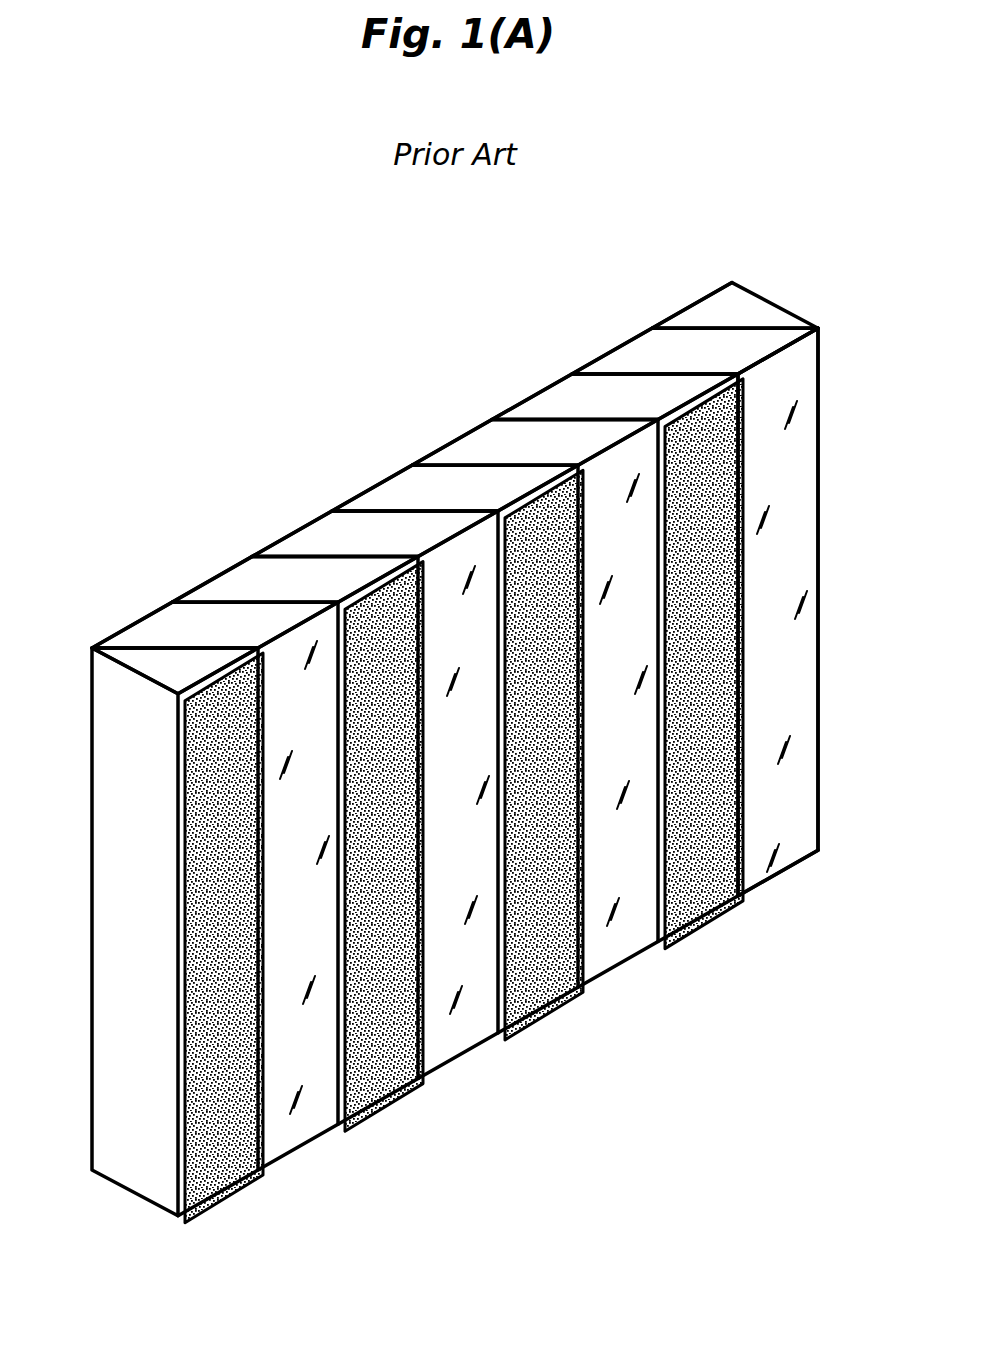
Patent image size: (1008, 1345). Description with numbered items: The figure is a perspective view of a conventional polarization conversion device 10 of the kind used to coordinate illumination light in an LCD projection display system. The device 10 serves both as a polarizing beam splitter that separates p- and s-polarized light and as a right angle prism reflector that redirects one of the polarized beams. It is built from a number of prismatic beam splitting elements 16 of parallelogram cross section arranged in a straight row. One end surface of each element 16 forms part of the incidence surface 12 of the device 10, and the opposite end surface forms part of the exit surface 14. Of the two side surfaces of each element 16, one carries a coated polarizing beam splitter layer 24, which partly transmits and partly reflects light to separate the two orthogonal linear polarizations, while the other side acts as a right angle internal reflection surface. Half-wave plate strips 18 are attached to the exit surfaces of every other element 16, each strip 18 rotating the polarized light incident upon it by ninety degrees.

The polarization conversion device 10 is at (459, 743).
The incidence surface 12 is at (697, 302).
The exit surface 14 is at (786, 446).
The prismatic beam splitting elements 16 is at (122, 661).
The half-wave plate strips 18 is at (247, 1183).
The polarizing beam splitter layer 24 is at (128, 647).